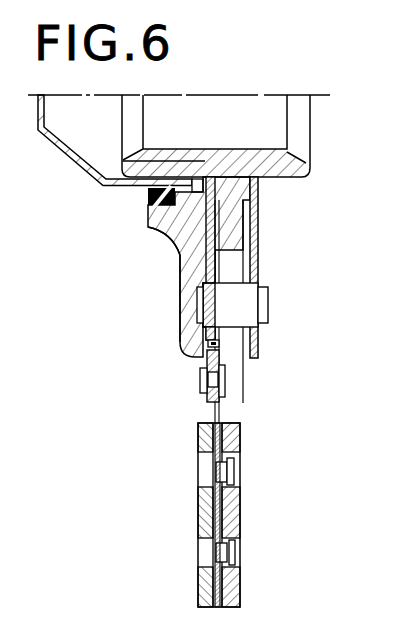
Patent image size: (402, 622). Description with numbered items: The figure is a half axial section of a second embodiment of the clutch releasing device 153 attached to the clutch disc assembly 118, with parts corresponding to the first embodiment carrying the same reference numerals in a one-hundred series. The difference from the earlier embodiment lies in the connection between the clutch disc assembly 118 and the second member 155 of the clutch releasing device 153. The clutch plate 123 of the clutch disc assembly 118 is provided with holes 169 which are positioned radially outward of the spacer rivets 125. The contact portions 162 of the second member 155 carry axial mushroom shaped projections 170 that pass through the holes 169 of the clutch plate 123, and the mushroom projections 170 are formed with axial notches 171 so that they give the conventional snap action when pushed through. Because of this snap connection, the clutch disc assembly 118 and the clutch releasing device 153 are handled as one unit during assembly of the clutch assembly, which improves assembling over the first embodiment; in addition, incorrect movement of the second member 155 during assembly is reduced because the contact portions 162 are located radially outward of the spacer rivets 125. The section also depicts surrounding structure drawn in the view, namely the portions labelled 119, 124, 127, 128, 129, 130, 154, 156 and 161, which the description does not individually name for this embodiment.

The clutch disc assembly 118 is at (268, 187).
The chamfered shoulder 119 is at (300, 161).
The clutch plate 123 is at (180, 281).
The outer tube 124 is at (256, 240).
The spacer rivets 125 is at (243, 307).
The shaft 127 is at (226, 443).
The nut 128 is at (201, 379).
The plate member 129 is at (205, 517).
The plate member 130 is at (235, 512).
The clutch releasing device 153 is at (147, 224).
The housing wall 154 is at (74, 156).
The second member 155 is at (180, 240).
The seal ring 156 is at (147, 205).
The cylindrical wall 161 is at (180, 318).
The contact portions 162 is at (206, 352).
The holes 169 is at (215, 331).
The mushroom shaped projections 170 is at (221, 352).
The axial notches 171 is at (219, 343).